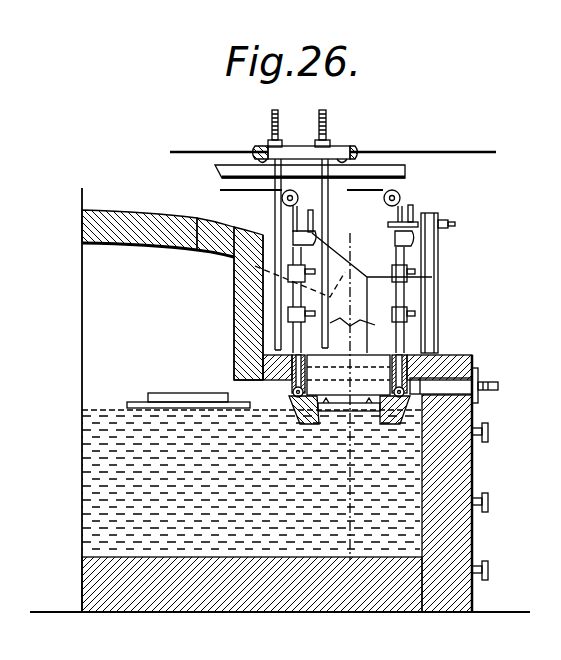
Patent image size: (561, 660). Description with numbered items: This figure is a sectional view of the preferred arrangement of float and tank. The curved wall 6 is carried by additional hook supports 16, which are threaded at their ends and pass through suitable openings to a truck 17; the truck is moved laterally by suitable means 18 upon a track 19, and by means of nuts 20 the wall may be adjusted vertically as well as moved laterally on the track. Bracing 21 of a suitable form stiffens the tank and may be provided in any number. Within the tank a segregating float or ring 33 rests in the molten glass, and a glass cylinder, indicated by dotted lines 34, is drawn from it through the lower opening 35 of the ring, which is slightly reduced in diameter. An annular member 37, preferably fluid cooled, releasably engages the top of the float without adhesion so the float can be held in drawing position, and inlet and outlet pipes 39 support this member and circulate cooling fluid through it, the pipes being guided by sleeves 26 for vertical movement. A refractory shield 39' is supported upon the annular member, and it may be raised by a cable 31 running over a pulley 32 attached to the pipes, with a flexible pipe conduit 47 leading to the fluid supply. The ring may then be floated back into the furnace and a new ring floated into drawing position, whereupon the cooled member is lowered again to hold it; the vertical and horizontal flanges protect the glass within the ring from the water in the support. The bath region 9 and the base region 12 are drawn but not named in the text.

The wall 6 is at (234, 305).
The molten bath 9 is at (82, 510).
The base plate 12 is at (443, 355).
The hook supports 16 is at (331, 208).
The truck 17 is at (331, 146).
The means for moving the truck 18 is at (478, 150).
The track 19 is at (405, 171).
The nuts 20 is at (280, 145).
The bracing 21 is at (439, 257).
The sleeves 26 is at (296, 266).
The cable 31 is at (397, 214).
The pulley 32 is at (282, 199).
The segregating float 33 is at (178, 395).
The glass cylinder 34 is at (350, 290).
The lower opening 35 is at (321, 420).
The annular member 37 is at (291, 398).
The inlet and outlet pipes 39 is at (331, 301).
The refractory shield 39' is at (349, 374).
The flexible pipe conduit 47 is at (416, 210).